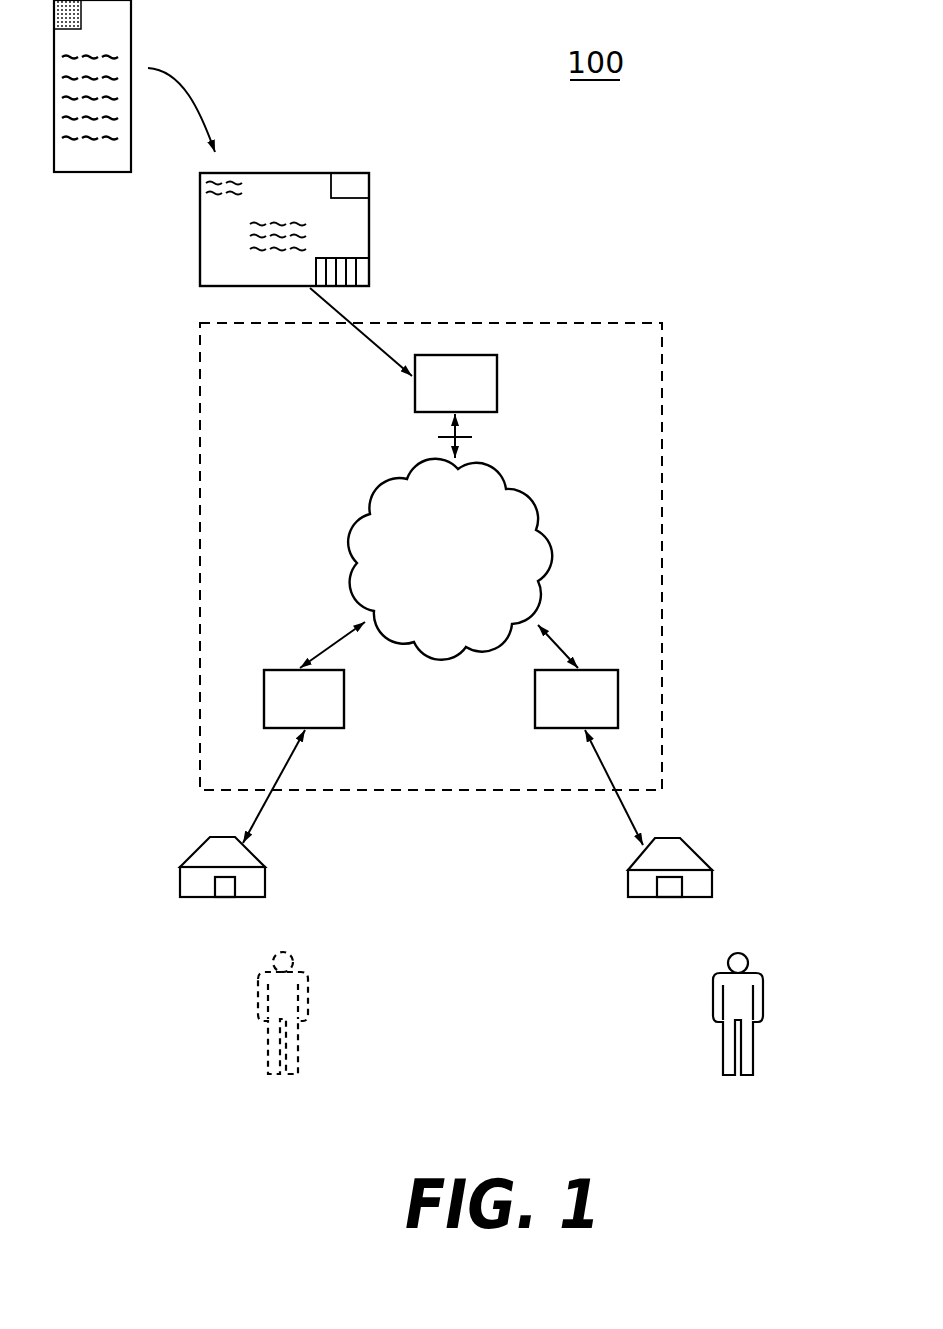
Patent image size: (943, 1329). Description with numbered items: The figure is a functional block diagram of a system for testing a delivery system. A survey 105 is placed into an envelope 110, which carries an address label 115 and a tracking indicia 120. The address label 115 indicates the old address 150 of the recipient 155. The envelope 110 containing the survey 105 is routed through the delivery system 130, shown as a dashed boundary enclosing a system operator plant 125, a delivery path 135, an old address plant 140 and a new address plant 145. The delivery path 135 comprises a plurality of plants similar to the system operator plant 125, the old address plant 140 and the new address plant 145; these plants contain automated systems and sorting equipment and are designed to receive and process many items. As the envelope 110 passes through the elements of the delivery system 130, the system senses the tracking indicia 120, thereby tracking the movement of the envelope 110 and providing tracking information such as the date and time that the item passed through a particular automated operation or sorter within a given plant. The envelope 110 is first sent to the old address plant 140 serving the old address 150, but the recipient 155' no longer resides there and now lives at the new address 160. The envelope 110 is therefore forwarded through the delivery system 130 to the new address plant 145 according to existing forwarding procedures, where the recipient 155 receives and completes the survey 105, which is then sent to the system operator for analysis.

The survey 105 is at (131, 50).
The envelope 110 is at (200, 248).
The address label 115 is at (303, 230).
The tracking indicia 120 is at (369, 273).
The system operator plant 125 is at (497, 372).
The delivery system 130 is at (662, 535).
The delivery path 135 is at (530, 500).
The old address plant 140 is at (322, 728).
The new address plant 145 is at (553, 728).
The old address 150 is at (245, 850).
The recipient 155 is at (772, 998).
The recipient 155' is at (324, 998).
The new address 160 is at (700, 852).